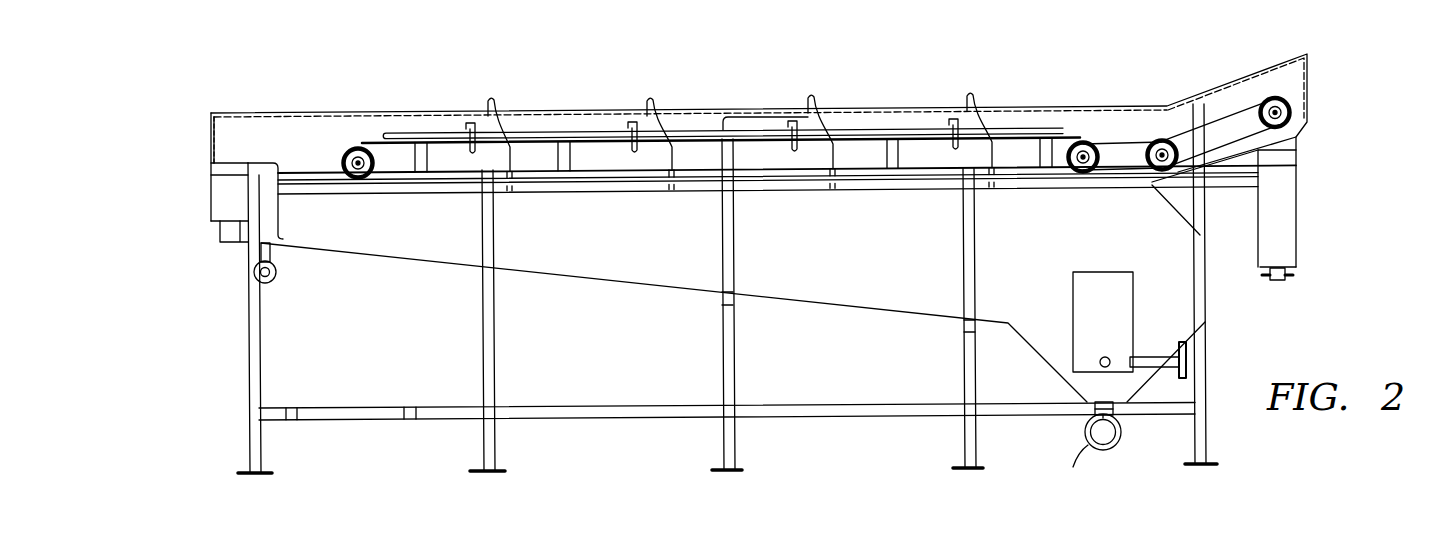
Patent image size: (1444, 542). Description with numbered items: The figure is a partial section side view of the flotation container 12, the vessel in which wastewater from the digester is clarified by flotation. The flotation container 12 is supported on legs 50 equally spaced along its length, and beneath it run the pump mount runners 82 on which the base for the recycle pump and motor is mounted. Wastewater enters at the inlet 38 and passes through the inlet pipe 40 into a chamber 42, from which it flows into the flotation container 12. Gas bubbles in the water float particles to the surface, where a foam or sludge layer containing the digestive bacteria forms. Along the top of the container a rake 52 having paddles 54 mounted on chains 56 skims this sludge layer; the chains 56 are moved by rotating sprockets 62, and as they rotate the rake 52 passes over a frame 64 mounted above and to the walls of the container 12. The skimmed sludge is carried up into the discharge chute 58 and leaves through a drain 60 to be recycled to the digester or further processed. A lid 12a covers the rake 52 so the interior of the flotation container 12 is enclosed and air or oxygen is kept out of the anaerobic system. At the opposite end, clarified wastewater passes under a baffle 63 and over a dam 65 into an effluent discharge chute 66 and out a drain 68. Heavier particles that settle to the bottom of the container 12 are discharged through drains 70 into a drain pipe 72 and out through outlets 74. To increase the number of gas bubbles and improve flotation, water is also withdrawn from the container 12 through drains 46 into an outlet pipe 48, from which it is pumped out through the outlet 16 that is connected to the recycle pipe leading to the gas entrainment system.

The flotation container 12 is at (900, 85).
The lid 12a is at (574, 110).
The outlet 16 is at (277, 272).
The inlet 38 is at (1188, 357).
The inlet pipe 40 is at (1098, 358).
The chamber 42 is at (1115, 321).
The drains 46 is at (257, 250).
The outlet pipe 48 is at (270, 281).
The legs 50 is at (262, 455).
The rake 52 is at (437, 124).
The paddles 54 is at (489, 99).
The chains 56 is at (385, 138).
The discharge chute 58 is at (1267, 220).
The drain 60 is at (1285, 281).
The sprockets 62 is at (350, 148).
The baffle 63 is at (282, 212).
The frame 64 is at (742, 116).
The dam 65 is at (245, 188).
The effluent discharge chute 66 is at (218, 188).
The drain 68 is at (216, 240).
The drains 70 is at (1118, 421).
The drain pipe 72 is at (1117, 446).
The outlets 74 is at (1065, 468).
The pump mount runners 82 is at (292, 407).